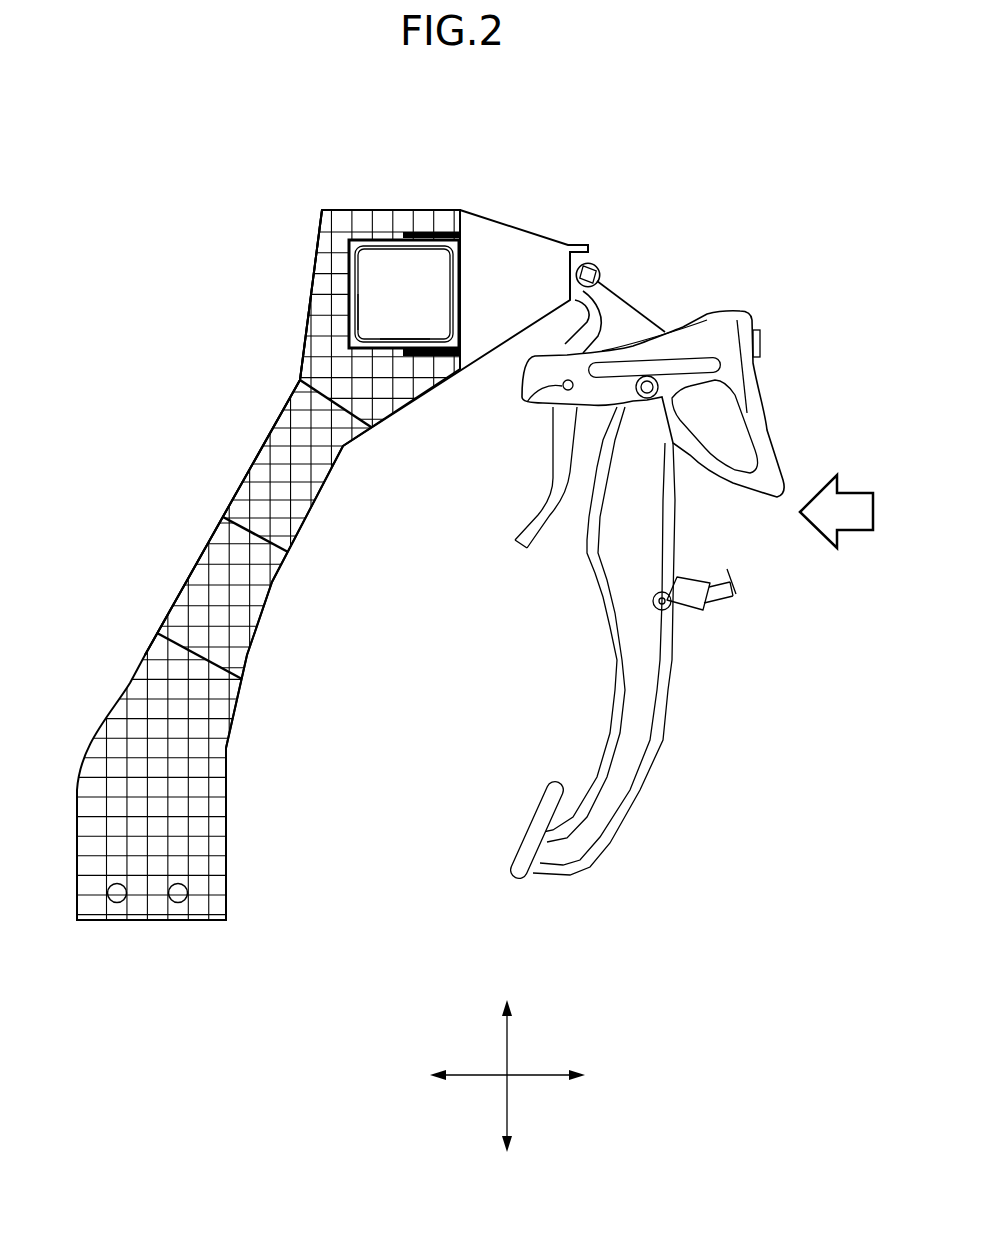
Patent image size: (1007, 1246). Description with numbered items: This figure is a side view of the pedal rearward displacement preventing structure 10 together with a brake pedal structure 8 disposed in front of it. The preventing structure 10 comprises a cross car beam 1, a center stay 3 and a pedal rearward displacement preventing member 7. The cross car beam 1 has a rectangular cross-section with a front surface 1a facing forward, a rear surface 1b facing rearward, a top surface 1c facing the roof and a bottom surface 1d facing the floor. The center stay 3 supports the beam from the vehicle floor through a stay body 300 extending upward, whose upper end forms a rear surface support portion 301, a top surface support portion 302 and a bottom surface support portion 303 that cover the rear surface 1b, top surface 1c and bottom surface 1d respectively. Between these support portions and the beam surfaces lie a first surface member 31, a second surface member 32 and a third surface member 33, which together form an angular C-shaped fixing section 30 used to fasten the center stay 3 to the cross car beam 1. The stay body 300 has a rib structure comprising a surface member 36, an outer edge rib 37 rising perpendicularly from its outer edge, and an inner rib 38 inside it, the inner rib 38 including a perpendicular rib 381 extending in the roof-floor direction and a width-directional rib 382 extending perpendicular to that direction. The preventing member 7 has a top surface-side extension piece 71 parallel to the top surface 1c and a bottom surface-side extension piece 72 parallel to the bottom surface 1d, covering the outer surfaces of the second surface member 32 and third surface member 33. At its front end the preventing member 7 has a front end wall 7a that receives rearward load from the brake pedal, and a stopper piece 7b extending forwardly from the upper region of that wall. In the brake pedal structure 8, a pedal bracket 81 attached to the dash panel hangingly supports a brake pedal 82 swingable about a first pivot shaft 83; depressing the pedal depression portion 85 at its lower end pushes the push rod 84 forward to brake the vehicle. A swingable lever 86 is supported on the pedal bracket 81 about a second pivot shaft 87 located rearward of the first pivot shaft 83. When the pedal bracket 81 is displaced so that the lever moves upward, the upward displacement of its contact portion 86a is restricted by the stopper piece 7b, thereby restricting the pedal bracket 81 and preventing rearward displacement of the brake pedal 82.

The cross car beam 1 is at (353, 258).
The front surface 1a is at (453, 285).
The rear surface 1b is at (364, 312).
The top surface 1c is at (420, 250).
The bottom surface 1d is at (403, 343).
The center stay 3 is at (228, 485).
The pedal rearward displacement preventing member 7 is at (514, 216).
The front end wall 7a is at (565, 329).
The stopper piece 7b is at (578, 244).
The brake pedal structure 8 is at (748, 178).
The pedal rearward displacement preventing structure 10 is at (300, 180).
The angular C-shaped fixing section 30 is at (198, 310).
The first surface member 31 is at (357, 293).
The second surface member 32 is at (380, 246).
The third surface member 33 is at (385, 339).
The surface member 36 is at (285, 527).
The outer edge rib 37 is at (205, 557).
The inner rib 38 is at (72, 553).
The top surface-side extension piece 71 is at (427, 231).
The bottom surface-side extension piece 72 is at (432, 358).
The pedal bracket 81 is at (723, 306).
The brake pedal 82 is at (677, 655).
The first pivot shaft 83 is at (665, 382).
The push rod 84 is at (692, 580).
The pedal depression portion 85 is at (540, 800).
The swingable lever 86 is at (629, 296).
The contact portion 86a is at (598, 263).
The second pivot shaft 87 is at (528, 401).
The stay body 300 is at (273, 582).
The rear surface support portion 301 is at (320, 295).
The top surface support portion 302 is at (382, 222).
The bottom surface support portion 303 is at (407, 377).
The perpendicular rib 381 is at (203, 580).
The width-directional rib 382 is at (200, 600).